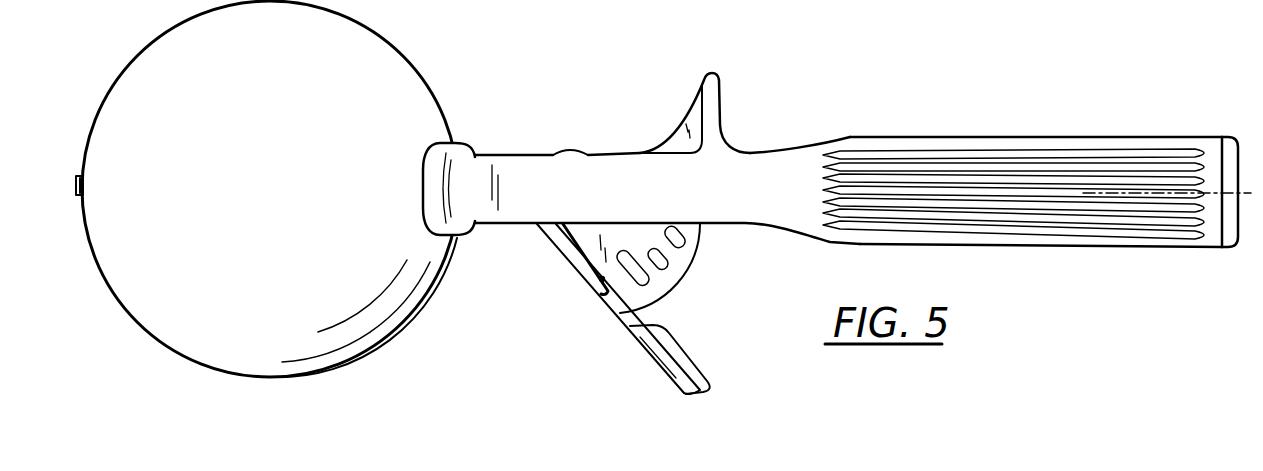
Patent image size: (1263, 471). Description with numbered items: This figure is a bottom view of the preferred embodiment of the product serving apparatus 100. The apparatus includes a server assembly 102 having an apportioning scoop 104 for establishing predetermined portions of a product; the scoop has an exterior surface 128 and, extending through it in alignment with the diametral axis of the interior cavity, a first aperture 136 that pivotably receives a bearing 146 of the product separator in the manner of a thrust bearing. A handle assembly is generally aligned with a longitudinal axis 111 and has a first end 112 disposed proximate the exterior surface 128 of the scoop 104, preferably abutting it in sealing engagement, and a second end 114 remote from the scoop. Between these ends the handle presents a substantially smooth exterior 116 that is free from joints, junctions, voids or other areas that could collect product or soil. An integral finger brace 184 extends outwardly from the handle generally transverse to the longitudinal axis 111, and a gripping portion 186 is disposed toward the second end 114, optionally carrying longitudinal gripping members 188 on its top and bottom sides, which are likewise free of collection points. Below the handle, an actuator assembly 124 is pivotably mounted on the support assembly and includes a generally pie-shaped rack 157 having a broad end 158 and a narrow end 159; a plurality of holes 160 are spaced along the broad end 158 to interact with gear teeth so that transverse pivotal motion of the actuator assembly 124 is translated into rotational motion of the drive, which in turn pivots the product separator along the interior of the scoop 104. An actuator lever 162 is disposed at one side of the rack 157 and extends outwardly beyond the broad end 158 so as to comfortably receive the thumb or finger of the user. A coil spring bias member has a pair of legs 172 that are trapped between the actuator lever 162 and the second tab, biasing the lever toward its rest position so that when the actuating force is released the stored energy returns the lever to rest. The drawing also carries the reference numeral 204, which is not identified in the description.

The product serving apparatus 100 is at (930, 99).
The server assembly 102 is at (117, 78).
The apportioning scoop 104 is at (172, 33).
The longitudinal axis 111 is at (1157, 193).
The first end 112 is at (462, 145).
The second end 114 is at (1222, 249).
The smooth exterior 116 is at (794, 152).
The actuator assembly 124 is at (567, 268).
The exterior surface 128 is at (395, 50).
The first aperture 136 is at (80, 198).
The bearing 146 is at (78, 176).
The pie-shaped rack 157 is at (697, 242).
The broad end 158 is at (660, 302).
The narrow end 159 is at (572, 150).
The holes 160 is at (646, 276).
The actuator lever 162 is at (678, 355).
The legs 172 is at (588, 287).
The finger brace 184 is at (718, 74).
The gripping portion 186 is at (1104, 247).
The gripping members 188 is at (1042, 167).
The end cap 204 is at (1228, 135).